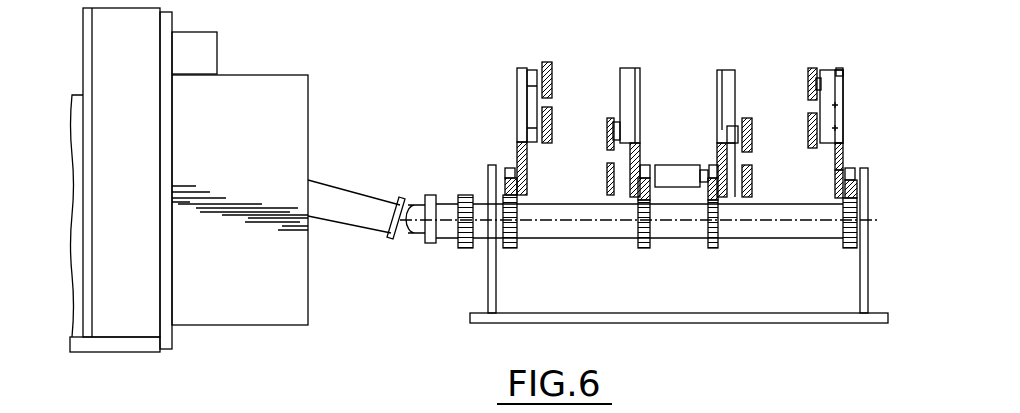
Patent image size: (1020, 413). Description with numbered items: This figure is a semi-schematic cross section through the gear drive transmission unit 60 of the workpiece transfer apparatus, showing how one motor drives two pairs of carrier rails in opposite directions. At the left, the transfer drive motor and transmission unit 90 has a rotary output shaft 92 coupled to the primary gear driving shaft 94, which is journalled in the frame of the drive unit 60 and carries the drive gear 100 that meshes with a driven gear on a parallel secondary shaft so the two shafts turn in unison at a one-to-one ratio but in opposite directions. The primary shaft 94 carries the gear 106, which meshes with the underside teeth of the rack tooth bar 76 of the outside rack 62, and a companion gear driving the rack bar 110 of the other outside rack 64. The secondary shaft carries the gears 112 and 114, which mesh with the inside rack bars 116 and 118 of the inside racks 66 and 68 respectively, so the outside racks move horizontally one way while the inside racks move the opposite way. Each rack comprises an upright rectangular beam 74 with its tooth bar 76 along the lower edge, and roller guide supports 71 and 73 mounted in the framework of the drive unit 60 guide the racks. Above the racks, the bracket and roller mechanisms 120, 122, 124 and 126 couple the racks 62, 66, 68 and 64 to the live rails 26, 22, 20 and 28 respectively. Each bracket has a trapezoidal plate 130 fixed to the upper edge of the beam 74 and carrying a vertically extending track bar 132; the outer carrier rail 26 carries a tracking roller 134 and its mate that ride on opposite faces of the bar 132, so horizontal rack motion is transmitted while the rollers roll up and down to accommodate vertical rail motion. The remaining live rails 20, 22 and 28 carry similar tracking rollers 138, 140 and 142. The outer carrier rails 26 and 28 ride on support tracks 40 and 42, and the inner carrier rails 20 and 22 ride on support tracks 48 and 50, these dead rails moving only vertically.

The transfer drive motor and transmission unit 90 is at (278, 72).
The rotary output shaft 92 is at (349, 192).
The gear drive transmission unit 60 is at (432, 258).
The drive gear 100 is at (466, 248).
The primary gear driving shaft 94 is at (548, 232).
The rack bar 110 is at (494, 183).
The roller guide support 73 is at (514, 178).
The rack 64 is at (514, 142).
The bracket and roller mechanism 126 is at (513, 70).
The tracking rollers 142 is at (531, 72).
The outer workpiece carrier rail 28 is at (553, 63).
The support track 42 is at (575, 113).
The inner workpiece carrier rail 20 is at (606, 145).
The support track 48 is at (606, 183).
The tracking rollers 138 is at (618, 125).
The bracket and roller mechanism 124 is at (638, 68).
The rack 68 is at (642, 146).
The gear 114 is at (640, 240).
The rack bar 118 is at (652, 192).
The rack bar 116 is at (707, 208).
The gear 112 is at (713, 252).
The rack 66 is at (714, 157).
The bracket and roller mechanism 122 is at (714, 72).
The tracking rollers 140 is at (733, 128).
The inner workpiece carrier rail 22 is at (753, 143).
The support track 50 is at (753, 172).
The outer workpiece carrier rail 26 is at (806, 72).
The support track 40 is at (806, 125).
The track bar 132 is at (822, 70).
The bracket and roller mechanism 120 is at (845, 78).
The trapezoidal plate 130 is at (843, 108).
The tracking roller 134 is at (845, 70).
The rack 62 is at (845, 150).
The rectangular beam 74 is at (838, 178).
The roller guide support 71 is at (852, 180).
The gear 106 is at (848, 248).
The rack tooth bar 76 is at (866, 188).